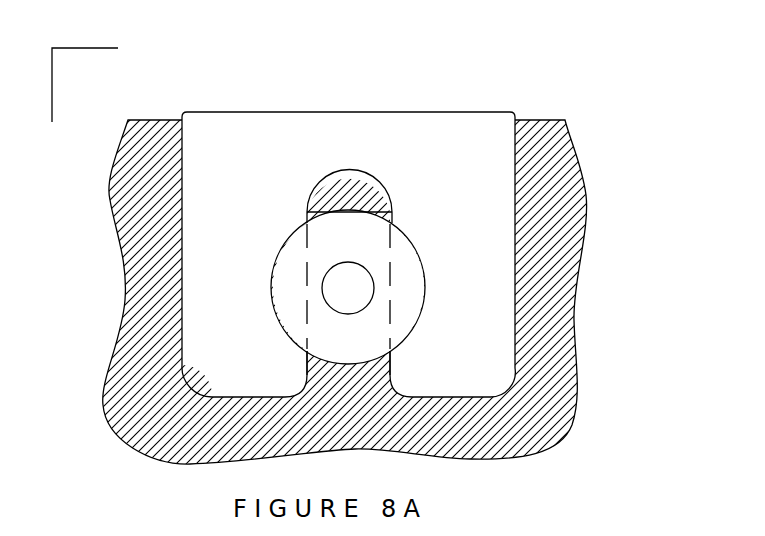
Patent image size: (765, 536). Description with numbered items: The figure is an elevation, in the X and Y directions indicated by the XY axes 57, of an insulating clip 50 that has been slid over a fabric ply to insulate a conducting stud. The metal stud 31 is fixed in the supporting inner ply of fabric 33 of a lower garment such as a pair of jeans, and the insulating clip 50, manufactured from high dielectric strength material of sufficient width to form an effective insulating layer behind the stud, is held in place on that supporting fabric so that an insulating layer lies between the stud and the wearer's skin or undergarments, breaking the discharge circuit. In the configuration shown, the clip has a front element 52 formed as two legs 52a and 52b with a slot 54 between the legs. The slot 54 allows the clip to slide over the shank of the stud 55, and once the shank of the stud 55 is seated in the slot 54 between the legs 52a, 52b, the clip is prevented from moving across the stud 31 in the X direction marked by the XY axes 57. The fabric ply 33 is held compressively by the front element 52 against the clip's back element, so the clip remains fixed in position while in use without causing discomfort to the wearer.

The XY axes 57 is at (75, 38).
The supporting inner ply of fabric 33 is at (558, 255).
The insulating clip 50 is at (442, 108).
The front element 52 is at (349, 140).
The leg 52a is at (220, 320).
The leg 52b is at (480, 330).
The metal stud 31 is at (367, 347).
The shank of the stud 55 is at (370, 268).
The slot 54 is at (350, 393).